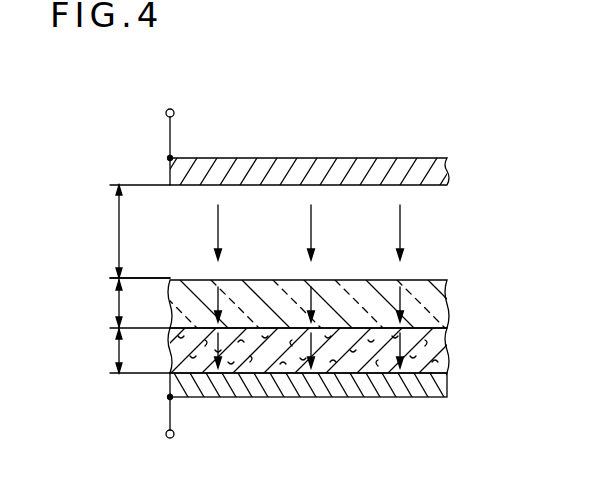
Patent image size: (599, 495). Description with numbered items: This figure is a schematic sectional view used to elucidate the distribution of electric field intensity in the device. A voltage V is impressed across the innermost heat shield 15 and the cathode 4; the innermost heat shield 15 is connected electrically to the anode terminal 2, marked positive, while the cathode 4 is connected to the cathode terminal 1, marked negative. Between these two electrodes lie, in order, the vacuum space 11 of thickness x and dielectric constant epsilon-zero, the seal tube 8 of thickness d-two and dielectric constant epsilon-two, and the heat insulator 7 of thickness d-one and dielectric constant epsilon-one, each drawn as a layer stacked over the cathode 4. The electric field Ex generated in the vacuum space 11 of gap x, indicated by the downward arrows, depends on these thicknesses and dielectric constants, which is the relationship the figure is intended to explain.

The cathode terminal 1 is at (175, 433).
The anode terminal 2 is at (175, 114).
The cathode 4 is at (440, 388).
The heat insulator 7 is at (432, 348).
The seal tube 8 is at (440, 313).
The vacuum space 11 is at (167, 231).
The innermost heat shield 15 is at (400, 171).